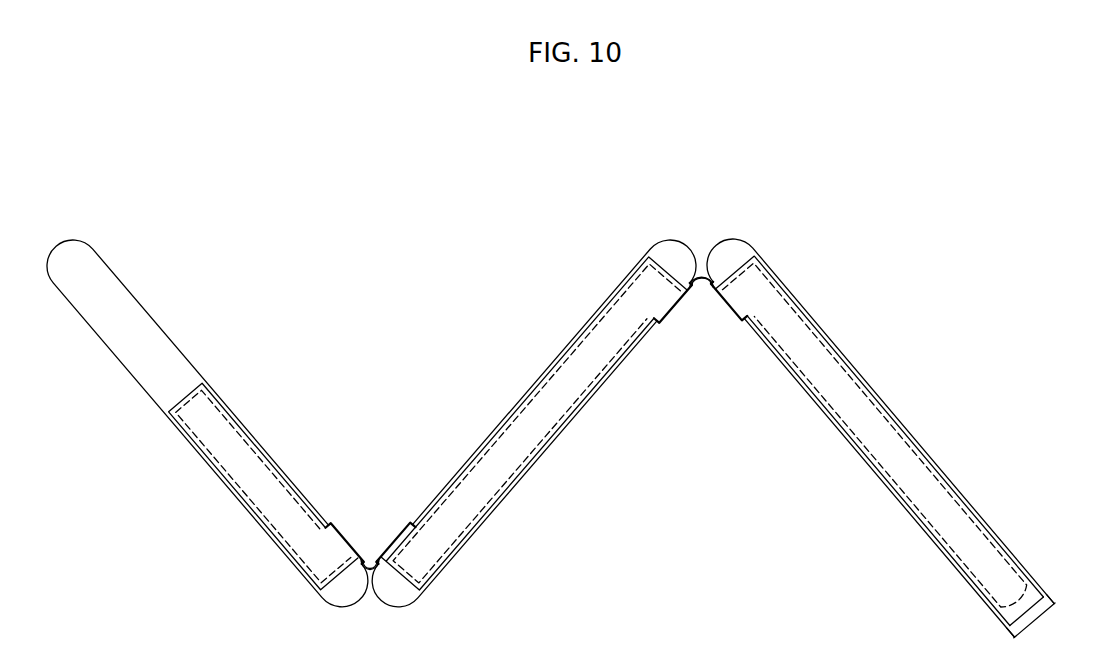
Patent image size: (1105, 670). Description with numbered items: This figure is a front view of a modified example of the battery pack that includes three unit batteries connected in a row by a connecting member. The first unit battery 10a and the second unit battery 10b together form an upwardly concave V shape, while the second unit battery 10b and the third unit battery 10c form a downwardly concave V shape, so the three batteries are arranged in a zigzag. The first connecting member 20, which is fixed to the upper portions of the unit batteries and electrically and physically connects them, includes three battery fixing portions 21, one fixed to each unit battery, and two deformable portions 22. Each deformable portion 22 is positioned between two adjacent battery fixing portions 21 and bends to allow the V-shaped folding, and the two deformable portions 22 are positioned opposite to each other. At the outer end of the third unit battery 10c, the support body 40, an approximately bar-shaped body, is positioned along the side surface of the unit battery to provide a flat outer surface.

The first unit battery 10a is at (112, 246).
The second unit battery 10b is at (632, 249).
The third unit battery 10c is at (842, 328).
The first connecting member 20 is at (178, 450).
The battery fixing portion 21 is at (237, 455).
The deformable portion 22 is at (370, 562).
The support body 40 is at (1046, 601).